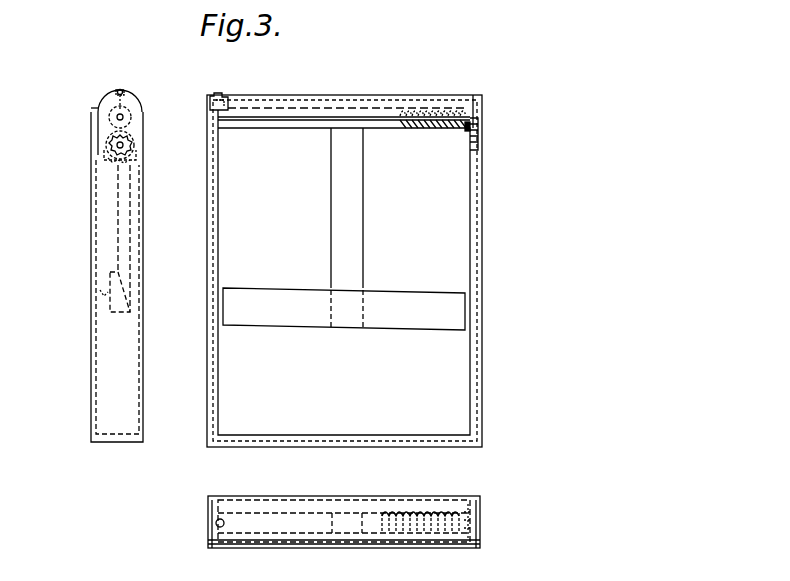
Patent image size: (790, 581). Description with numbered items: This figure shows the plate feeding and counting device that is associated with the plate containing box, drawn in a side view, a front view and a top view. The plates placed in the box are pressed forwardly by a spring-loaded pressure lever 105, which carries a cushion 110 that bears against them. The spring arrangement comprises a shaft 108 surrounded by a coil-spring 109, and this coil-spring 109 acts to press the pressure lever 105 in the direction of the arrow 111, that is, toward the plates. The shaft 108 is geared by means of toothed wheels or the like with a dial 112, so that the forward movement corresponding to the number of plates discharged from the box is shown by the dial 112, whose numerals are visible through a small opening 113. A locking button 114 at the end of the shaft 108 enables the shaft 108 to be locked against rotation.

The pressure lever 105 is at (123, 220).
The shaft 108 is at (124, 117).
The coil-spring 109 is at (410, 128).
The cushion 110 is at (390, 328).
The arrow 111 is at (74, 314).
The dial 112 is at (134, 152).
The small opening 113 is at (110, 158).
The locking button 114 is at (122, 84).